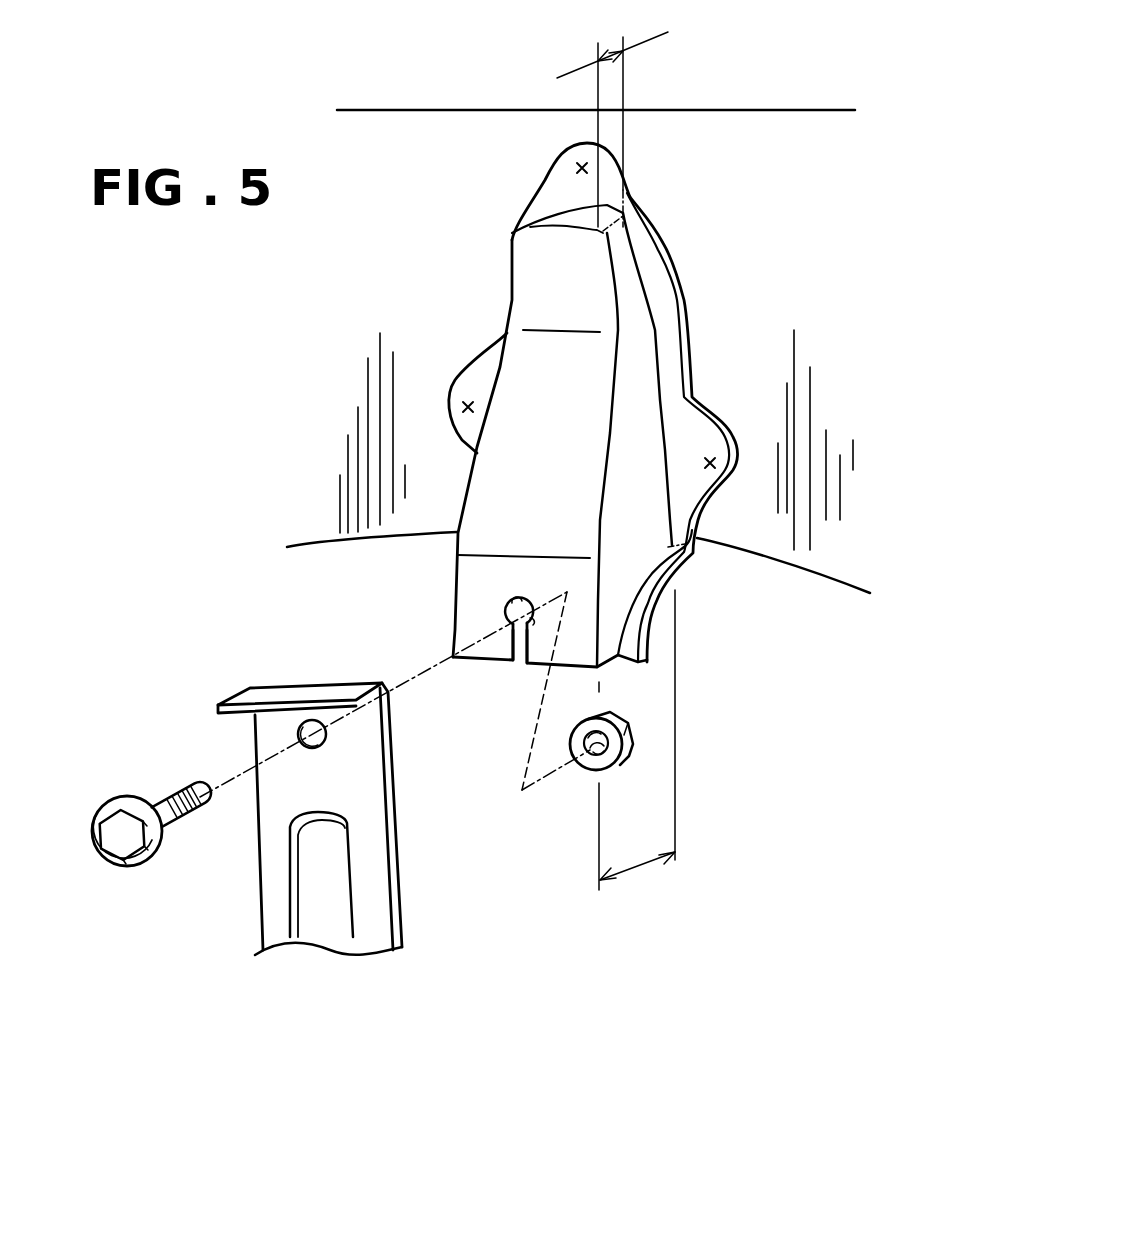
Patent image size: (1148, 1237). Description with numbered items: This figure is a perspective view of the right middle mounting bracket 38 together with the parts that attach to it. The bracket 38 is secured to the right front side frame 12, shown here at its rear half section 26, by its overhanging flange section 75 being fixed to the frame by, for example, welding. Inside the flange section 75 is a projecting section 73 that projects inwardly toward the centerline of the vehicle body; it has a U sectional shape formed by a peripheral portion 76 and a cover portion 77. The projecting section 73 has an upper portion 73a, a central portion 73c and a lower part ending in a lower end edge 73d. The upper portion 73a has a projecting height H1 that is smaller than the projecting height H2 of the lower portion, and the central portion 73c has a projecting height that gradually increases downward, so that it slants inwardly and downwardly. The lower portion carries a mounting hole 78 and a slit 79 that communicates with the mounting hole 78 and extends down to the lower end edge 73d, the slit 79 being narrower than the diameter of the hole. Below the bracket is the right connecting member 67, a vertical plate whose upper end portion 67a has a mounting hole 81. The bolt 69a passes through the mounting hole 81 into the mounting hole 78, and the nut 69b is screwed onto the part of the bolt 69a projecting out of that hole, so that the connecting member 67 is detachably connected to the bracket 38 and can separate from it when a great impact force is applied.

The right front side frame 12 is at (551, 65).
The rear half section 26 is at (365, 110).
The right middle mounting bracket 38 is at (688, 277).
The projecting section 73 is at (480, 483).
The upper portion 73a is at (542, 268).
The central portion 73c is at (590, 460).
The lower end edge 73d is at (465, 597).
The flange section 75 is at (670, 347).
The peripheral portion 76 is at (640, 435).
The cover portion 77 is at (518, 395).
The mounting hole 78 is at (529, 600).
The slit 79 is at (528, 657).
The right connecting member 67 is at (288, 881).
The upper end portion 67a is at (290, 800).
The bolt 69a is at (168, 792).
The nut 69b is at (632, 733).
The mounting hole 81 is at (323, 740).
The projecting height H1 is at (612, 115).
The projecting height H2 is at (637, 754).